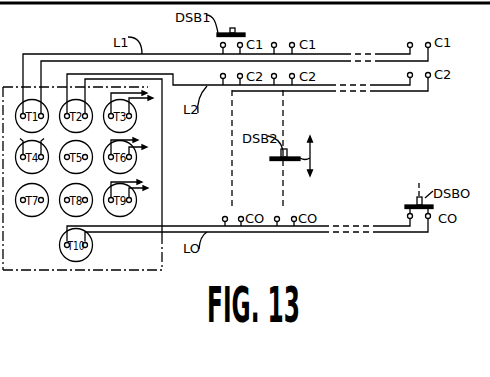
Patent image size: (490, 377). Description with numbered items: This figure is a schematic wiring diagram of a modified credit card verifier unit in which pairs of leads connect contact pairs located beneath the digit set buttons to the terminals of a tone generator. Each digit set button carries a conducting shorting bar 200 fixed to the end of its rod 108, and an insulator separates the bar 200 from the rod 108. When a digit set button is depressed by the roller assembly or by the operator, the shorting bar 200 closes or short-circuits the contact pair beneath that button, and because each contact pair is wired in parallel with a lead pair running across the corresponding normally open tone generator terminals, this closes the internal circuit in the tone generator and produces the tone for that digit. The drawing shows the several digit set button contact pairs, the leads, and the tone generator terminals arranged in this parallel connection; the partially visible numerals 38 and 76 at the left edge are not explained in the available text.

The rod 108 is at (239, 29).
The conducting shorting bar 200 is at (246, 35).
The control panel element 38 is at (8, 287).
The control panel element 76 is at (8, 321).